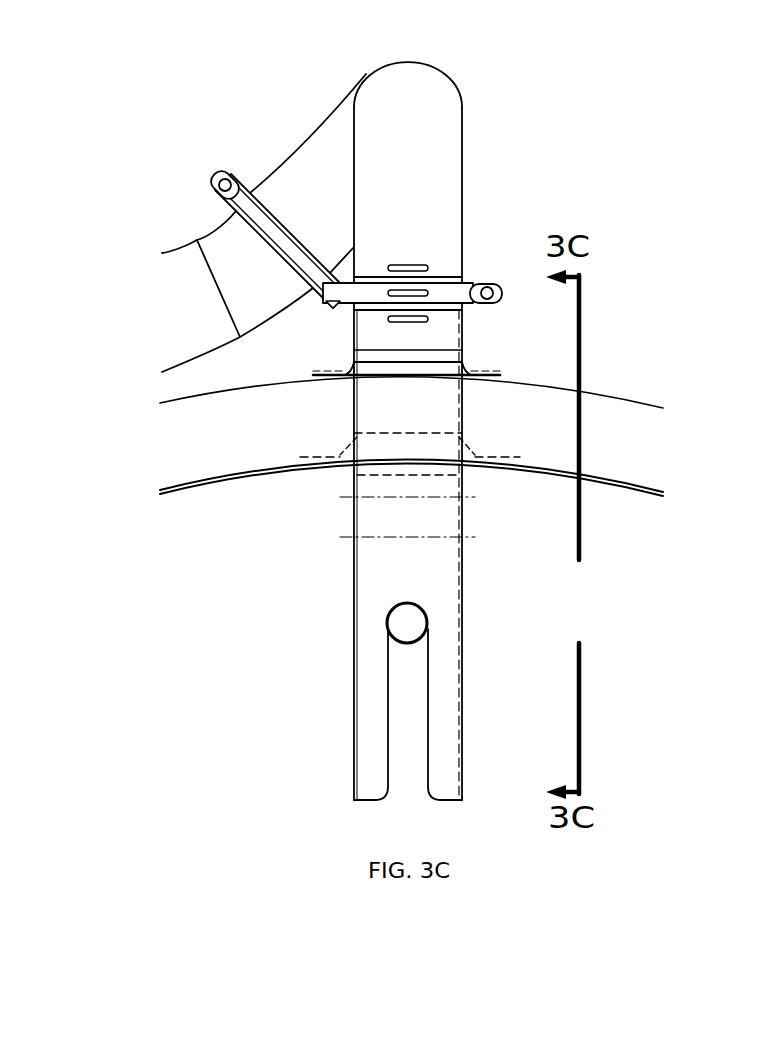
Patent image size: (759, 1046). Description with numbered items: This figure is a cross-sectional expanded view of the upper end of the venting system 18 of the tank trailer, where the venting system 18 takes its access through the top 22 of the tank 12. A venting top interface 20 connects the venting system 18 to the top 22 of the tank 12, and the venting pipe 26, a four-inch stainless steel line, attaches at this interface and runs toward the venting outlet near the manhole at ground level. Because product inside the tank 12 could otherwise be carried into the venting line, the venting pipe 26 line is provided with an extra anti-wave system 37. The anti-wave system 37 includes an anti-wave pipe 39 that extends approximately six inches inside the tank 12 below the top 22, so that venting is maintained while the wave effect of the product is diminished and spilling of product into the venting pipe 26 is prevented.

The venting system 18 is at (288, 94).
The venting pipe 26 is at (184, 267).
The venting top interface 20 is at (480, 347).
The top 22 is at (637, 400).
The tank 12 is at (603, 455).
The anti-wave system 37 is at (294, 660).
The anti-wave pipe 39 is at (443, 580).